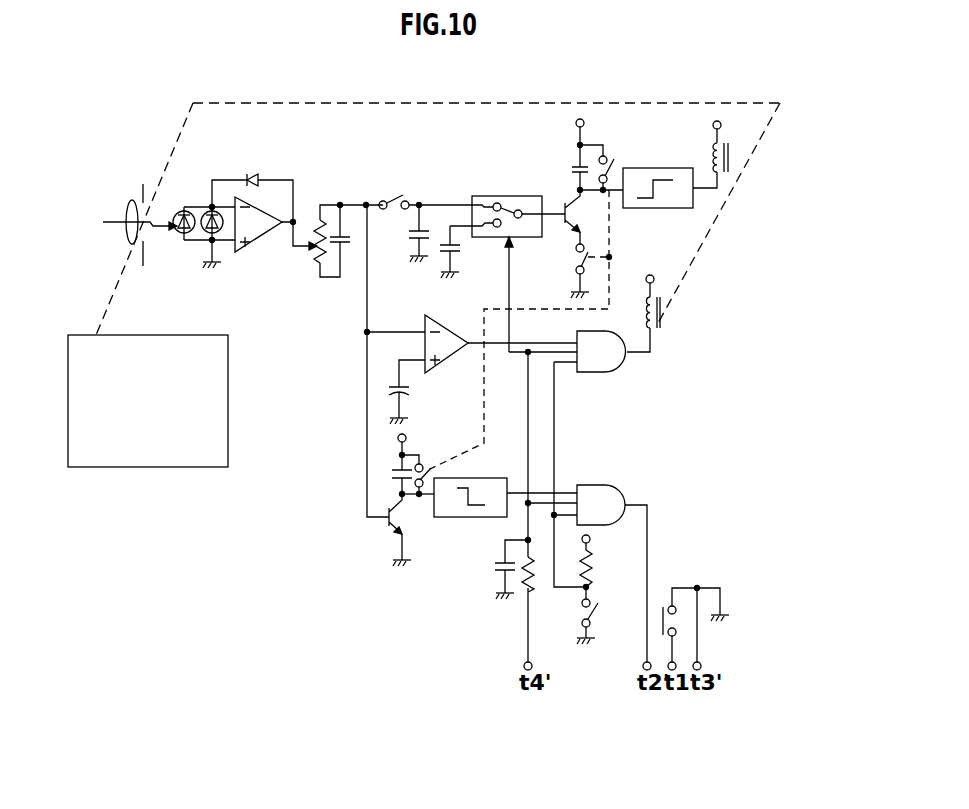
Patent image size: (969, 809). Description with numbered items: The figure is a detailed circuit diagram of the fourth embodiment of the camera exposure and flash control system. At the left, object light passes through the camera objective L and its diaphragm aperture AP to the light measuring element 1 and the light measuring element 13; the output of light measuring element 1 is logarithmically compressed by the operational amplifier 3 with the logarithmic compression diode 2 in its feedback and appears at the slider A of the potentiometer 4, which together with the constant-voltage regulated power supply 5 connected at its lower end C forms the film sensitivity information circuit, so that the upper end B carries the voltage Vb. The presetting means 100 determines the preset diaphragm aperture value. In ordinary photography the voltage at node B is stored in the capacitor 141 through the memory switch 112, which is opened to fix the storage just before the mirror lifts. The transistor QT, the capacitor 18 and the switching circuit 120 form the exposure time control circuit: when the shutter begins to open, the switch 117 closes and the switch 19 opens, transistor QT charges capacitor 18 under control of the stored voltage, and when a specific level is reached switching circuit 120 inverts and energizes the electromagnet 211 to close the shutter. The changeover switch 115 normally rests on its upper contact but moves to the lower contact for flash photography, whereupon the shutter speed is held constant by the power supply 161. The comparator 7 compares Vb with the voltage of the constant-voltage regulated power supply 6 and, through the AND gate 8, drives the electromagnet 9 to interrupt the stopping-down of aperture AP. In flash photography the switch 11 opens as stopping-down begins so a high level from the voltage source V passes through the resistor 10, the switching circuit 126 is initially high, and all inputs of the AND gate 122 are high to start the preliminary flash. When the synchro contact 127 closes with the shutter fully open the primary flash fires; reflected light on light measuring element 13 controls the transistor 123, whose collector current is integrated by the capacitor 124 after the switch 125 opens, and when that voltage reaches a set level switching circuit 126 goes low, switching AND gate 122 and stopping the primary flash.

The presetting means 100 is at (160, 467).
The camera objective L is at (130, 240).
The diaphragm aperture AP is at (143, 190).
The light measuring element 1 is at (181, 234).
The light measuring element 13 is at (208, 234).
The logarithmic compression diode 2 is at (250, 174).
The operational amplifier 3 is at (267, 238).
The slider A is at (311, 243).
The upper end of potentiometer B is at (340, 205).
The lower end of potentiometer C is at (303, 285).
The potentiometer 4 is at (313, 252).
The constant-voltage regulated power supply 5 is at (343, 245).
The memory switch 112 is at (395, 199).
The capacitor 141 is at (413, 239).
The changeover switch 115 is at (495, 196).
The power supply 161 is at (455, 250).
The transistor QT is at (575, 216).
The capacitor 18 is at (574, 166).
The switch 19 is at (610, 163).
The switch 117 is at (578, 262).
The switching circuit 120 is at (660, 168).
The electromagnet 211 is at (730, 164).
The electromagnet 9 is at (662, 314).
The AND gate 8 is at (606, 371).
The comparator 7 is at (443, 324).
The constant-voltage regulated power supply 6 is at (408, 395).
The transistor 123 is at (386, 528).
The capacitor 124 is at (394, 477).
The switch 125 is at (426, 465).
The switching circuit 126 is at (457, 517).
The AND gate 122 is at (602, 485).
The resistor 10 is at (592, 569).
The voltage source V is at (599, 541).
The switch 11 is at (591, 610).
The synchro contact 127 is at (661, 607).